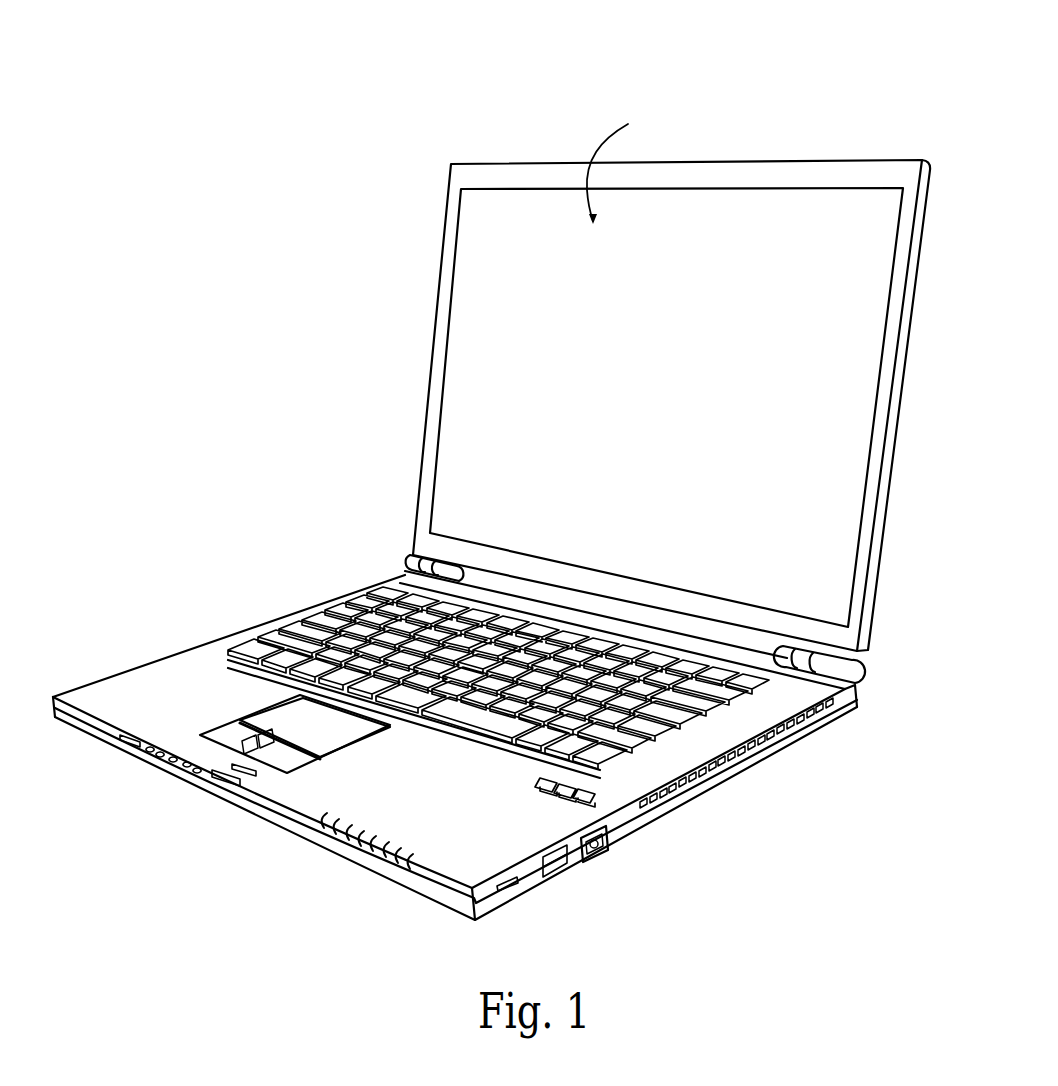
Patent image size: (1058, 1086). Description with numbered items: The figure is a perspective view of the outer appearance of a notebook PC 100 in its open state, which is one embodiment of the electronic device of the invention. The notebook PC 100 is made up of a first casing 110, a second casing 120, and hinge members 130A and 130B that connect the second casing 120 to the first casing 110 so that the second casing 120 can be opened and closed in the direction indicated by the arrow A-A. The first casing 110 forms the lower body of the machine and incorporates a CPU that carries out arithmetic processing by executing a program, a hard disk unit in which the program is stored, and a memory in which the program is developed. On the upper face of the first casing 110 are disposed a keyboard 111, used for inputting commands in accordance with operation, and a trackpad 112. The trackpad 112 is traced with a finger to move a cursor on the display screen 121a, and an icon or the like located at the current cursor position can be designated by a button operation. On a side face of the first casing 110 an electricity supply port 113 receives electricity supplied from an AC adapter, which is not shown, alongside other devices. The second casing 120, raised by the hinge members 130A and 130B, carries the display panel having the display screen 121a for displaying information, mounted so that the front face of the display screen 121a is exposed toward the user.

The notebook PC 100 is at (834, 92).
The first casing 110 is at (113, 668).
The keyboard 111 is at (345, 627).
The trackpad 112 is at (273, 723).
The electricity supply port 113 is at (606, 849).
The second casing 120 is at (438, 208).
The display screen 121a is at (482, 237).
The hinge member 130A is at (800, 655).
The hinge member 130B is at (438, 568).